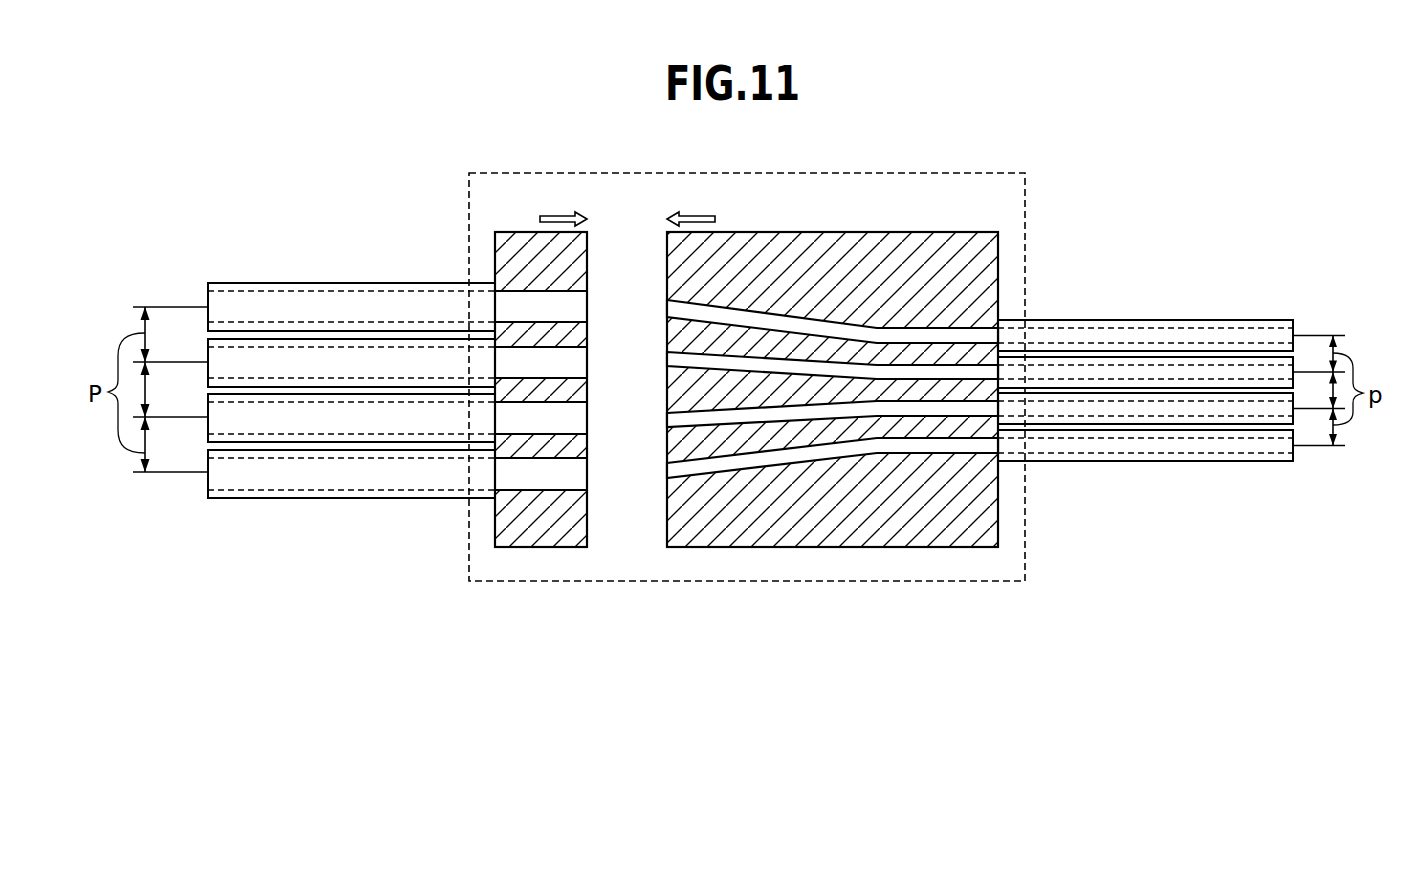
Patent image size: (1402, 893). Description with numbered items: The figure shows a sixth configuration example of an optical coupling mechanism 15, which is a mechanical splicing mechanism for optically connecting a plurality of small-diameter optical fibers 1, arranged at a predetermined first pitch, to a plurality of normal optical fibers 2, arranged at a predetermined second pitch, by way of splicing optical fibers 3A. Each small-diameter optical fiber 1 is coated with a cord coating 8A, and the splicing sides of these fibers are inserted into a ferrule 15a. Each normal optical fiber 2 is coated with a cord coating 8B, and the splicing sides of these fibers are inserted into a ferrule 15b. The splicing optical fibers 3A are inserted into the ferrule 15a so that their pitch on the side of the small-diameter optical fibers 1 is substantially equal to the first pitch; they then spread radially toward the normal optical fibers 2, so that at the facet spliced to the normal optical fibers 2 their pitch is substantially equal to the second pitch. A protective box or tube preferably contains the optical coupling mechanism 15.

The small-diameter optical fiber 1 is at (968, 445).
The normal optical fiber 2 is at (573, 473).
The splicing optical fiber 3A is at (815, 457).
The cord coating 8A is at (1130, 321).
The cord coating 8B is at (347, 283).
The optical coupling mechanism 15 is at (580, 173).
The ferrule 15a is at (832, 422).
The ferrule 15b is at (541, 422).